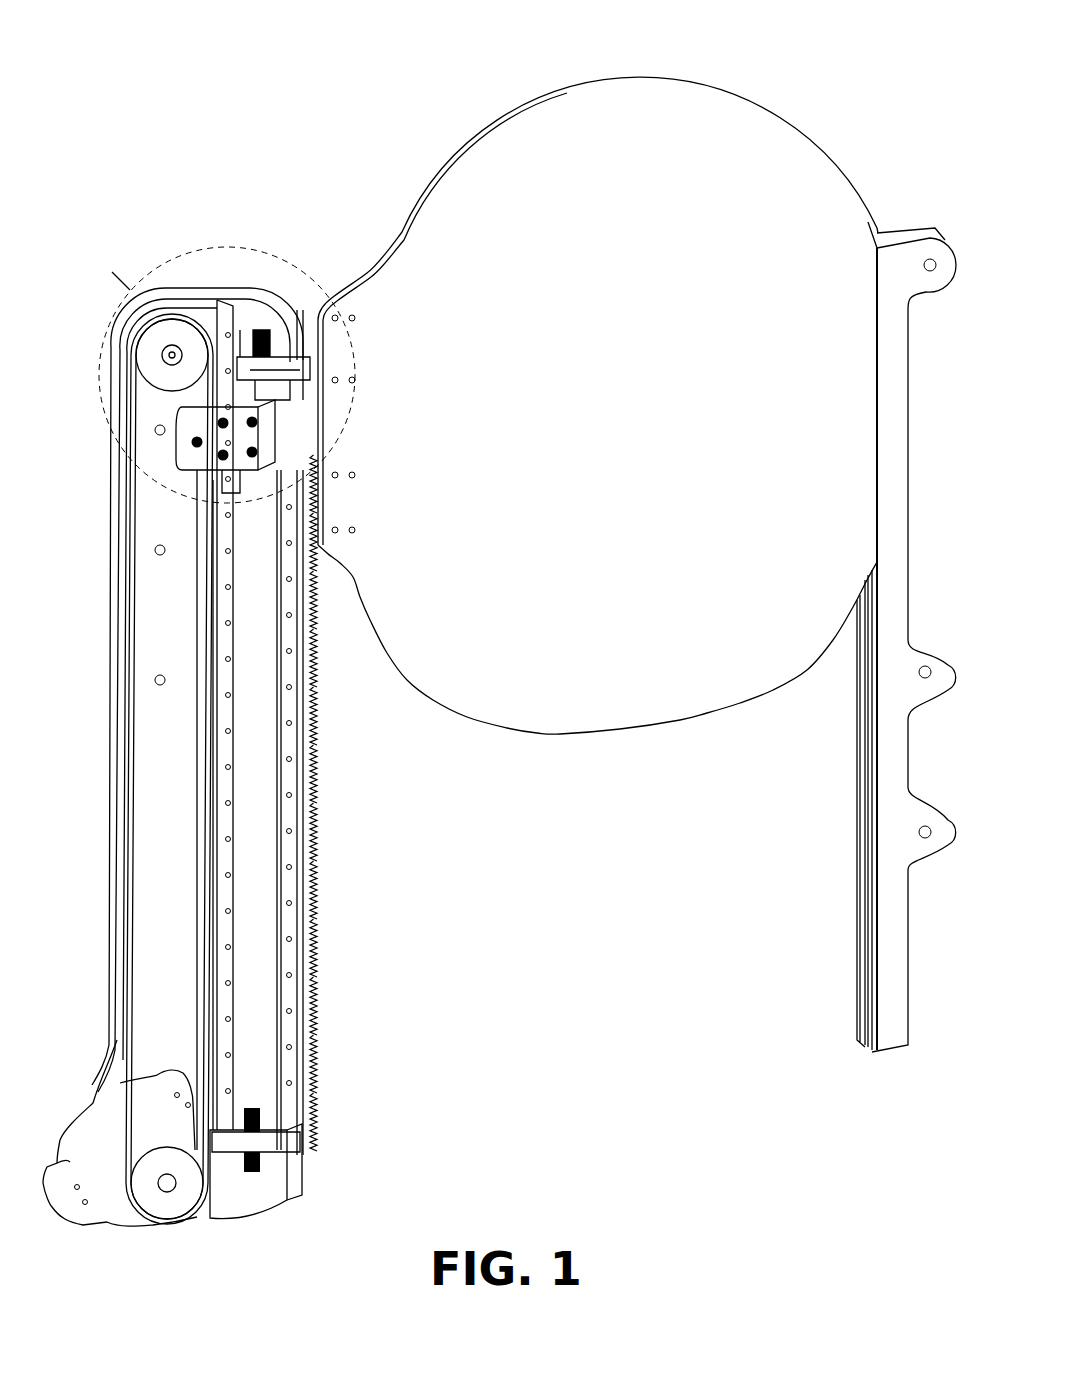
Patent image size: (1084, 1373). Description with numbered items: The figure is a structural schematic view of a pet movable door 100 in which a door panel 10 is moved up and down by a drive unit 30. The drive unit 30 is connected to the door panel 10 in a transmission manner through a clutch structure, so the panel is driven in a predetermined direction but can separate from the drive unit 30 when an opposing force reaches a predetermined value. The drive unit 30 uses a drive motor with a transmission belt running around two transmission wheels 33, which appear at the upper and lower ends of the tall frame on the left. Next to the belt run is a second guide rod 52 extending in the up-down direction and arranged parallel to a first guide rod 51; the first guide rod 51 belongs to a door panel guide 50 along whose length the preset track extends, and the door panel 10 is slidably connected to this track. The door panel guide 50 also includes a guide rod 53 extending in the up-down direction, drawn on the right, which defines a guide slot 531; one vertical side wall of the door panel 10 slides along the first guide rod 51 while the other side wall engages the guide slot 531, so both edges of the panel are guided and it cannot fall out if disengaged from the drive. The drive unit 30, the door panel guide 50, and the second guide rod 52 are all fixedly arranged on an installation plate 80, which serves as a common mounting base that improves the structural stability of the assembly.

The pet movable door 100 is at (518, 50).
The door panel 10 is at (455, 242).
The drive unit 30 is at (132, 600).
The transmission wheels 33 is at (147, 1177).
The installation plate 80 is at (160, 748).
The door panel guide 50 is at (700, 818).
The first guide rod 51 is at (290, 735).
The second guide rod 52 is at (228, 818).
The guide rod 53 is at (893, 697).
The guide slot 531 is at (870, 758).